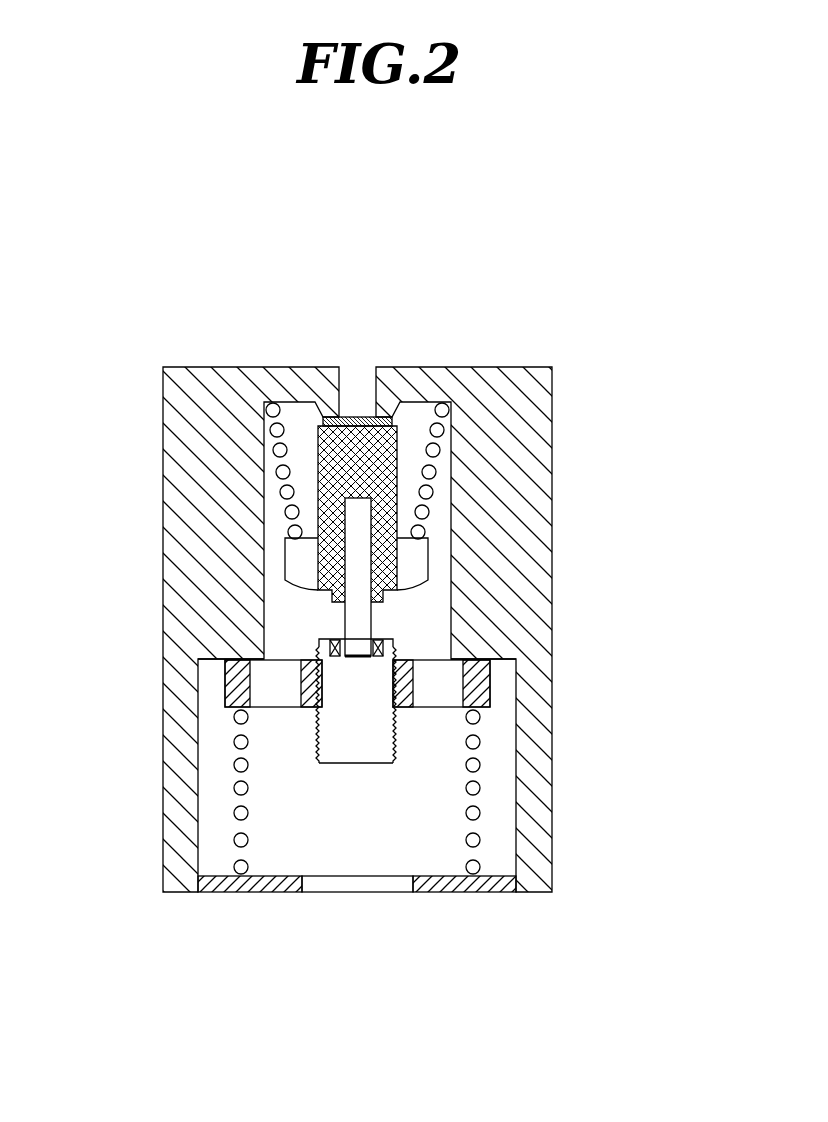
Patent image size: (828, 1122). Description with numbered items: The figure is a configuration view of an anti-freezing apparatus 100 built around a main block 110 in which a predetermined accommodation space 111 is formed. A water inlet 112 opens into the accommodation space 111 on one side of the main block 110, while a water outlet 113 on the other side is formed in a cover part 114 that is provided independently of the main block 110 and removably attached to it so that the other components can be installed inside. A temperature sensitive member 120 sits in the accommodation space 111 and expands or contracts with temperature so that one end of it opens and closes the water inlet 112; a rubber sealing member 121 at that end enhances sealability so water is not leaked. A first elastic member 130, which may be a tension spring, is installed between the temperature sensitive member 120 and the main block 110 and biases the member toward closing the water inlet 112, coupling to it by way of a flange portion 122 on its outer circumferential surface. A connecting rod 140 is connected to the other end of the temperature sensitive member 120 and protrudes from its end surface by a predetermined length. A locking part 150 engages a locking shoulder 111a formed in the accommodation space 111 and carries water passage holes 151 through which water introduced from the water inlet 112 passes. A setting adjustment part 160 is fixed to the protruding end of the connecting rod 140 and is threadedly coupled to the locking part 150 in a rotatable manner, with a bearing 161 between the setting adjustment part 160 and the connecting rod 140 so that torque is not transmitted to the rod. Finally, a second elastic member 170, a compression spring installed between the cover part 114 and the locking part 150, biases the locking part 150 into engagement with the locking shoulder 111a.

The anti-freezing apparatus 100 is at (509, 356).
The main block 110 is at (553, 397).
The accommodation space 111 is at (412, 615).
The locking shoulder 111a is at (212, 660).
The water inlet 112 is at (352, 388).
The water outlet 113 is at (360, 883).
The cover part 114 is at (468, 887).
The temperature sensitive member 120 is at (397, 450).
The sealing member 121 is at (360, 417).
The flange portion 122 is at (418, 550).
The first elastic member 130 is at (282, 473).
The connecting rod 140 is at (355, 622).
The locking part 150 is at (487, 694).
The water passage holes 151 is at (277, 700).
The setting adjustment part 160 is at (397, 743).
The bearing 161 is at (337, 658).
The second elastic member 170 is at (482, 815).